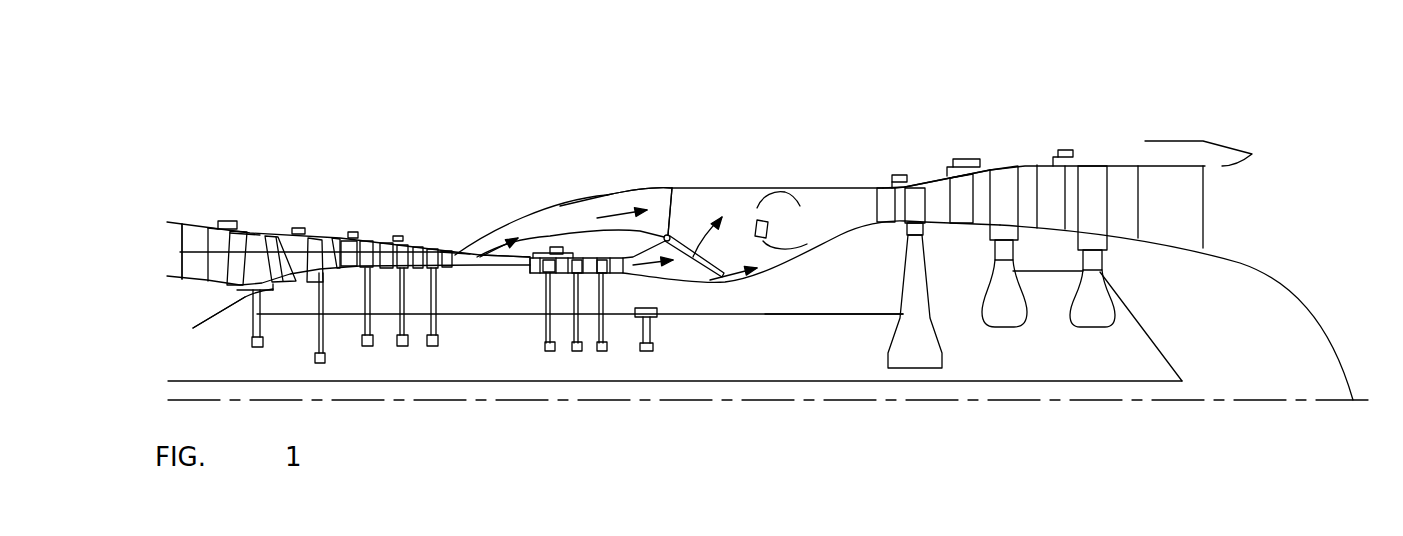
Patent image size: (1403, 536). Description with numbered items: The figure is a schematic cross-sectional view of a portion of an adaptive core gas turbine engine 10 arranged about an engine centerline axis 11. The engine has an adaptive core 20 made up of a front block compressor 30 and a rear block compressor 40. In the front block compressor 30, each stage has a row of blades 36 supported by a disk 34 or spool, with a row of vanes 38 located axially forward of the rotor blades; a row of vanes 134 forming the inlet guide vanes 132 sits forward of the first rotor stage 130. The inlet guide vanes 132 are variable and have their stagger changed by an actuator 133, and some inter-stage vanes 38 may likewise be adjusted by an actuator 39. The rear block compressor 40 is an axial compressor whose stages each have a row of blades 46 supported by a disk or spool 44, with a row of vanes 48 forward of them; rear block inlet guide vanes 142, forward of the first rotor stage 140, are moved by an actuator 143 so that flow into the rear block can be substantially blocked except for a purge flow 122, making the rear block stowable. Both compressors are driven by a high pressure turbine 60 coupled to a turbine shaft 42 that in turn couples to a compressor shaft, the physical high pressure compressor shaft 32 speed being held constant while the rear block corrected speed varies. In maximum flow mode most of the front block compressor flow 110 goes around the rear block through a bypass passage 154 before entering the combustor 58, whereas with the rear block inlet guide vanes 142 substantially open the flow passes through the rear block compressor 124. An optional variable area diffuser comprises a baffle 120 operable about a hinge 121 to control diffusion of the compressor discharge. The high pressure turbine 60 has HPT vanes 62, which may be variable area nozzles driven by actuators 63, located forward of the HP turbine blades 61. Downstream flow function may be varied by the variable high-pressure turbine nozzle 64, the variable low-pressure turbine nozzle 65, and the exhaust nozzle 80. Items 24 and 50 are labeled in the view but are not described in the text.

The adaptive core gas turbine engine 10 is at (265, 128).
The engine centerline axis 11 is at (527, 400).
The adaptive core 20 is at (473, 212).
The low pressure shaft 24 is at (440, 362).
The front block compressor 30 is at (386, 333).
The high pressure compressor shaft 32 is at (478, 313).
The disk 34 is at (317, 337).
The blades 36 is at (322, 237).
The vanes 38 is at (283, 227).
The actuator 39 is at (397, 238).
The rear block compressor 40 is at (625, 337).
The turbine shaft 42 is at (767, 316).
The disk or spool 44 is at (575, 332).
The blades 46 is at (590, 263).
The vanes 48 is at (560, 258).
The combustor section 50 is at (681, 200).
The combustor 58 is at (787, 222).
The high pressure turbine 60 is at (922, 178).
The HP turbine blades 61 is at (927, 222).
The HPT vanes 62 is at (885, 195).
The actuators 63 is at (893, 175).
The variable high-pressure turbine nozzle 64 is at (902, 170).
The variable low-pressure turbine nozzle 65 is at (985, 150).
The exhaust nozzle 80 is at (1245, 161).
The front block compressor flow 110 is at (522, 257).
The baffle 120 is at (678, 245).
The hinge 121 is at (674, 191).
The purge flow 122 is at (730, 278).
The flow through rear block compressor 124 is at (640, 270).
The first rotor stage 130 is at (257, 236).
The inlet guide vanes 132 is at (201, 226).
The actuator 133 is at (234, 220).
The row of vanes 134 is at (217, 217).
The first rotor stage 140 is at (547, 303).
The rear block inlet guide vanes 142 is at (540, 222).
The actuator 143 is at (548, 247).
The bypass passage 154 is at (613, 193).